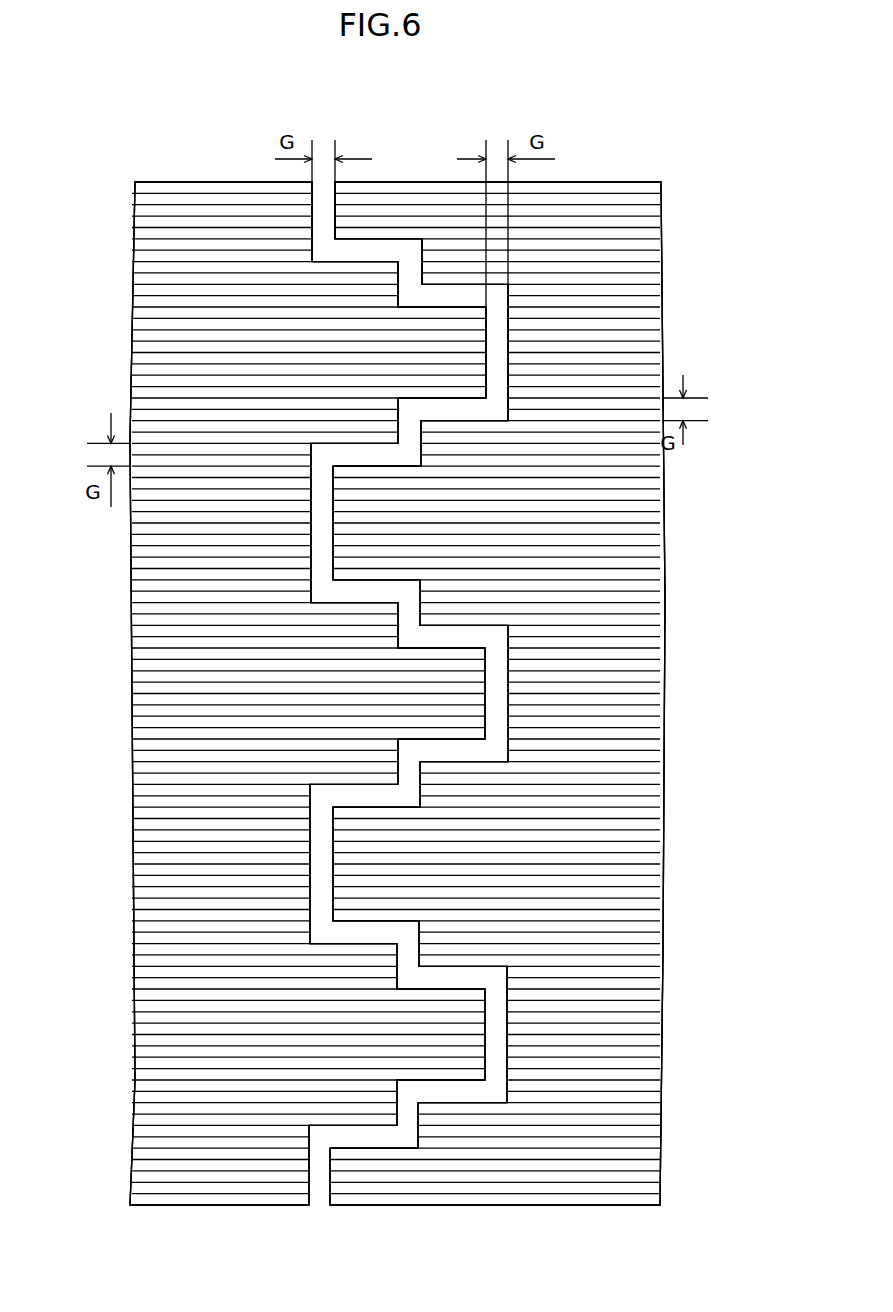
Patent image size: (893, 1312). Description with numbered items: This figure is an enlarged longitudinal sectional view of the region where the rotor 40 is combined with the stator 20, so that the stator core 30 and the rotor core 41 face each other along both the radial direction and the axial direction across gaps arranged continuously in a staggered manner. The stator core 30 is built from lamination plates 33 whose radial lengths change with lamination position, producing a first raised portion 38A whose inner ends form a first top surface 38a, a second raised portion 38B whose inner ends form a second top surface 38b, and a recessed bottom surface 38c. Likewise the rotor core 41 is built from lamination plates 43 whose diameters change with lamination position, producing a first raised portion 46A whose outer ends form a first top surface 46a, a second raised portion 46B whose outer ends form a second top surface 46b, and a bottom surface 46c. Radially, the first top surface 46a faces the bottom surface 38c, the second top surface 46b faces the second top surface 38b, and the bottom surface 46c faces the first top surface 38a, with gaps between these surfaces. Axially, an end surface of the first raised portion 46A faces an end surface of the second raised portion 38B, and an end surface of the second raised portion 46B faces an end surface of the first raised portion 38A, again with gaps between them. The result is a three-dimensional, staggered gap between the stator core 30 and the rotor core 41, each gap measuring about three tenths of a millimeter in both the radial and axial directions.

The rotor core 41 is at (118, 186).
The rotor 40 is at (252, 676).
The lamination plate 43 is at (188, 188).
The lamination plate 33 is at (585, 184).
The stator core 30 is at (680, 187).
The stator 20 is at (554, 675).
The first top surface 38a is at (334, 185).
The second top surface 38b is at (413, 237).
The bottom surface 38c is at (505, 325).
The first raised portion 38A is at (333, 222).
The second raised portion 38B is at (399, 282).
The first raised portion 46A is at (488, 382).
The second raised portion 46B is at (423, 280).
The first top surface 46a is at (483, 380).
The second top surface 46b is at (489, 318).
The bottom surface 46c is at (322, 238).